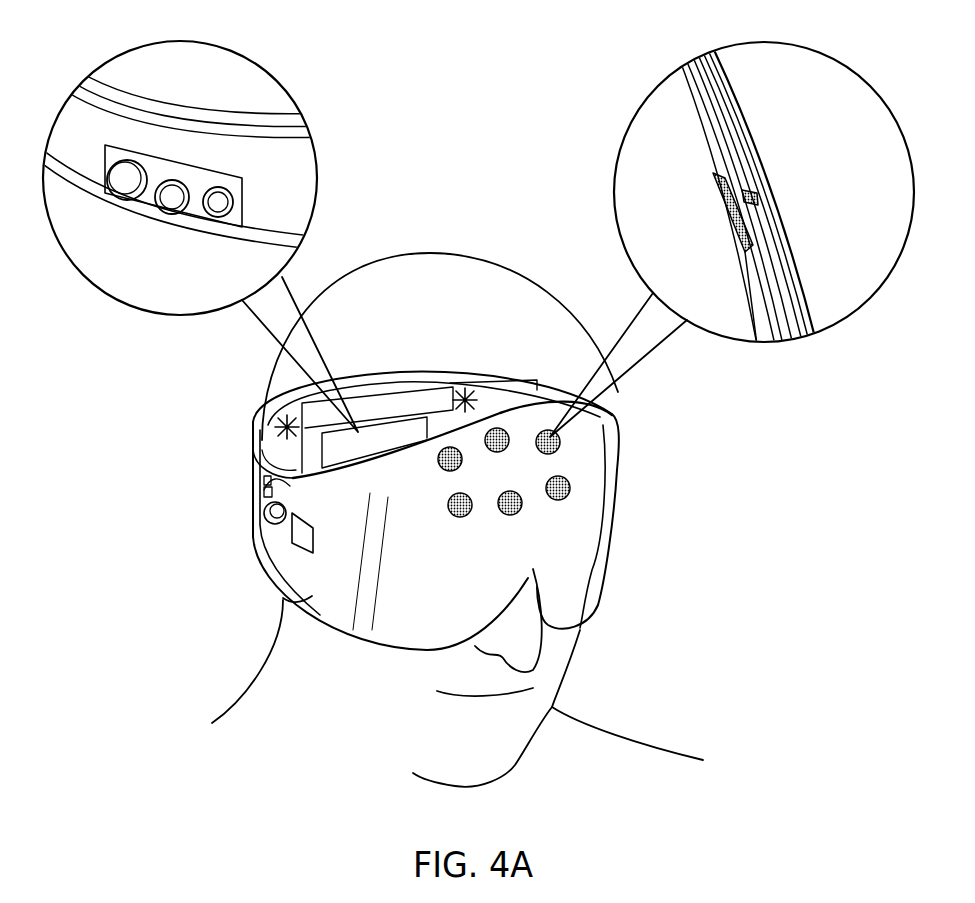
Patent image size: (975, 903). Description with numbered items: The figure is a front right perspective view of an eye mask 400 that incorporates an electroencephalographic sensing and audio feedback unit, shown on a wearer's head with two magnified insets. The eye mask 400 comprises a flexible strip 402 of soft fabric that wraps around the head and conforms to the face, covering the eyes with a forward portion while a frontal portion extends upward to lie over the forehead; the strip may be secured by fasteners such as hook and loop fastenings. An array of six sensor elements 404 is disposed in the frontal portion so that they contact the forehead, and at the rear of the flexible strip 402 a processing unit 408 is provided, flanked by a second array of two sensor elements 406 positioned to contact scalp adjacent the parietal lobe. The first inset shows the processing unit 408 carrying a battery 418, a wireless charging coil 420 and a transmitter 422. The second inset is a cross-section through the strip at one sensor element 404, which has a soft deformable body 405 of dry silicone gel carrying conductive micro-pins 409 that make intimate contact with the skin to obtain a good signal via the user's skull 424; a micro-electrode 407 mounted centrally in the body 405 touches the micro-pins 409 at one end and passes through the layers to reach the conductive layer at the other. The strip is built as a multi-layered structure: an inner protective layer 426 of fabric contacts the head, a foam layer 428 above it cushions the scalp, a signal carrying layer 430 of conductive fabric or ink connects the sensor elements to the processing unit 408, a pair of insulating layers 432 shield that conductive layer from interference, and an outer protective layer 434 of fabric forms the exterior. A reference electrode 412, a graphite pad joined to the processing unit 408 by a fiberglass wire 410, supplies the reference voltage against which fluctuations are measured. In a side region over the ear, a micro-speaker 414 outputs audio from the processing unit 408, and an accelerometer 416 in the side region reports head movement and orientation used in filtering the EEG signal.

The eye mask 400 is at (688, 655).
The flexible strip 402 is at (412, 633).
The sensor elements 404 is at (571, 491).
The soft deformable body 405 is at (742, 242).
The sensor elements 406 is at (467, 397).
The micro-electrode 407 is at (760, 197).
The processing unit 408 is at (387, 428).
The conductive micro-pins 409 is at (724, 214).
The fiberglass wire 410 is at (263, 480).
The reference electrode 412 is at (263, 492).
The micro-speaker 414 is at (264, 521).
The accelerometer 416 is at (292, 547).
The battery 418 is at (123, 192).
The wireless charging coil 420 is at (163, 213).
The transmitter 422 is at (218, 213).
The user's skull 424 is at (773, 197).
The inner protective layer 426 is at (682, 95).
The foam layer 428 is at (712, 127).
The signal carrying layer 430 is at (744, 157).
The insulating layers 432 is at (789, 247).
The outer protective layer 434 is at (807, 277).